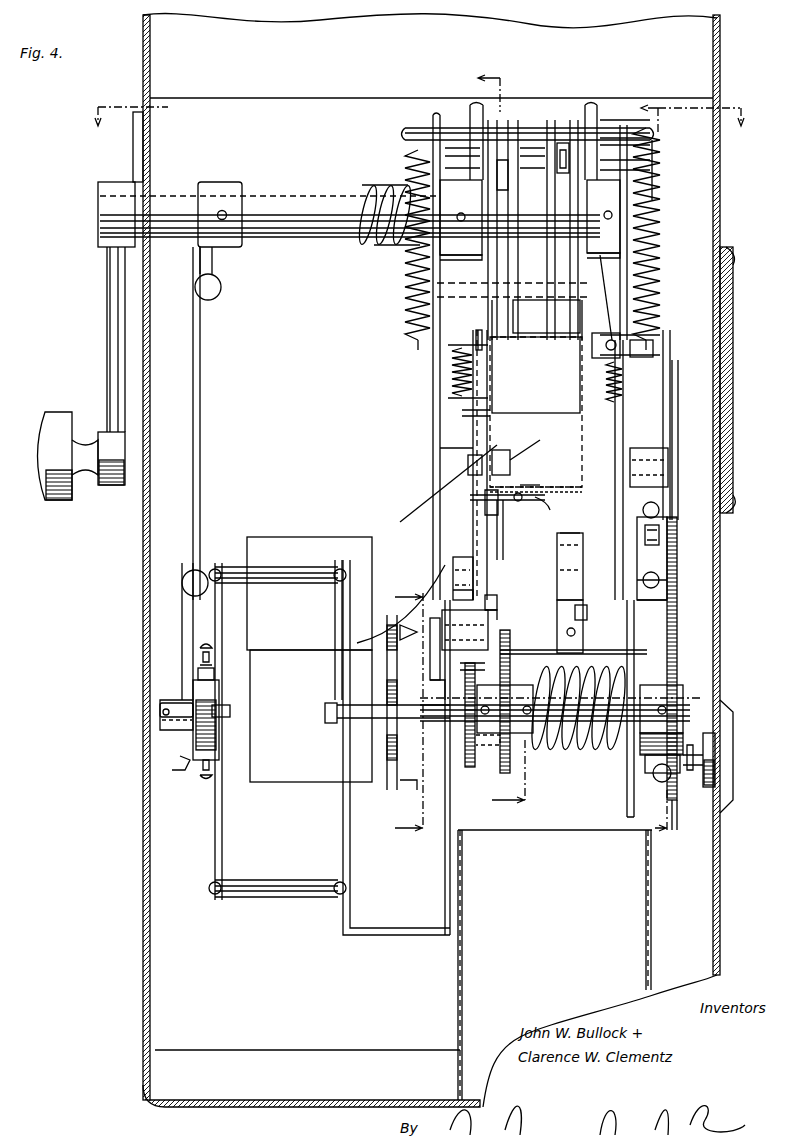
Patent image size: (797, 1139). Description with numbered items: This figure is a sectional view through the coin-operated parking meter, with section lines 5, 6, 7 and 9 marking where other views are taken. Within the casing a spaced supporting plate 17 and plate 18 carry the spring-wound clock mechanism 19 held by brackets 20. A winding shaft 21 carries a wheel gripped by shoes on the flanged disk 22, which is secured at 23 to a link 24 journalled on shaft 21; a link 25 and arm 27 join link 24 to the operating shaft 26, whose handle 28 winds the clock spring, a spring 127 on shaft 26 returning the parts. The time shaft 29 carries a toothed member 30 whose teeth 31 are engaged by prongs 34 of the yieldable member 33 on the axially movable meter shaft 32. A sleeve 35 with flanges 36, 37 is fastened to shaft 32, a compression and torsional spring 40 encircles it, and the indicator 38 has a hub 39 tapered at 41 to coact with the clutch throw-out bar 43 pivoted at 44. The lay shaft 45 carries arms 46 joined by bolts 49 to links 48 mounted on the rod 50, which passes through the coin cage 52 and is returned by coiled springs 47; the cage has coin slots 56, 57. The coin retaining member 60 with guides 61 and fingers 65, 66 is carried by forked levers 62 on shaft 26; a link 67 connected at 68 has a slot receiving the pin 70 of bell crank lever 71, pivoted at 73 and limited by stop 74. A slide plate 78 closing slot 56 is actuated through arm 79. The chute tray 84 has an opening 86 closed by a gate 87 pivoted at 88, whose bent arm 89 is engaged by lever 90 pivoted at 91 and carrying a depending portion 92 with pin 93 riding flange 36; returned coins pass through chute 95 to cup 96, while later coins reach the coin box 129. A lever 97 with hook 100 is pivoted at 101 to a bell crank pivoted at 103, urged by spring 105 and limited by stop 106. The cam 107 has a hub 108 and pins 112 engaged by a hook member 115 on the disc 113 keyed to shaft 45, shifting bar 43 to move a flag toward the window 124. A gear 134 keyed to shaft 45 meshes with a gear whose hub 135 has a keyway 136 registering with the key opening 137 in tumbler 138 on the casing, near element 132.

The section line 5- 5 is at (492, 441).
The section line 6- 6 is at (422, 129).
The section line 7- 7 is at (655, 471).
The section line 9- 9 is at (397, 717).
The supporting plate 17 is at (440, 449).
The supporting plate 18 is at (623, 412).
The clock mechanism 19 is at (215, 855).
The brackets 20 is at (380, 935).
The shaft 21 is at (230, 710).
The flanged disk 22 is at (212, 657).
The securing point 23 is at (195, 668).
The link 24 is at (182, 600).
The link 25 is at (200, 405).
The shaft 26 is at (275, 237).
The arm 27 is at (198, 258).
The handle 28 is at (107, 348).
The time shaft 29 is at (330, 723).
The toothed member 30 is at (390, 750).
The teeth 31 is at (560, 709).
The meter shaft 32 is at (395, 730).
The flat yieldable member 33 is at (395, 792).
The prongs 34 is at (398, 800).
The sleeve 35 is at (486, 735).
The flange 36 is at (468, 766).
The flange 37 is at (512, 773).
The indicator 38 is at (678, 390).
The hub 39 is at (665, 690).
The combined compression and torsional spring 40 is at (578, 720).
The tapered end 41 is at (625, 735).
The clutch throw-out bar 43 is at (640, 760).
The pivot 44 is at (640, 790).
The lay shaft 45 is at (497, 612).
The collars or arms 46 is at (497, 597).
The coiled springs 47 is at (405, 268).
The links 48 is at (567, 529).
The threaded bolts 49 is at (573, 553).
The shaft or rod 50 is at (405, 342).
The coin cage 52 is at (551, 444).
The coin slot 56 is at (505, 250).
The coin slot 57 is at (560, 262).
The coin retaining and actuating member 60 is at (505, 632).
The depending guides 61 is at (607, 130).
The forked levers 62 is at (458, 100).
The finger 65 is at (503, 163).
The finger 66 is at (562, 143).
The link 67 is at (640, 300).
The connection point 68 is at (661, 170).
The pin or stud 70 is at (640, 340).
The bell crank lever 71 is at (655, 355).
The pivot 73 is at (625, 380).
The stop 74 is at (640, 512).
The slide plate 78 is at (504, 525).
The arm 79 is at (486, 768).
The tray 84 is at (505, 450).
The opening 86 is at (528, 443).
The gate 87 is at (552, 507).
The pivot 88 is at (527, 482).
The bent arm 89 is at (470, 497).
The lever 90 is at (520, 500).
The pivot 91 is at (459, 645).
The depending portion 92 is at (470, 664).
The pin 93 is at (440, 680).
The chute 95 is at (438, 490).
The cup 96 is at (300, 532).
The lever 97 is at (468, 465).
The hook-like portion 100 is at (485, 505).
The pivotal connection 101 is at (473, 432).
The pivot 103 is at (476, 338).
The spring 105 is at (452, 372).
The stop 106 is at (462, 413).
The cam member 107 is at (669, 572).
The hub 108 is at (622, 652).
The pins or lugs 112 is at (660, 592).
The disc 113 is at (660, 545).
The hook member 115 is at (720, 878).
The window 124 is at (734, 312).
The spring 127 is at (372, 182).
The coin box 129 is at (470, 985).
The shaft 132 is at (675, 806).
The gear 134 is at (665, 555).
The hub 135 is at (716, 772).
The keyway 136 is at (692, 745).
The key opening 137 is at (735, 757).
The tumbler 138 is at (733, 718).